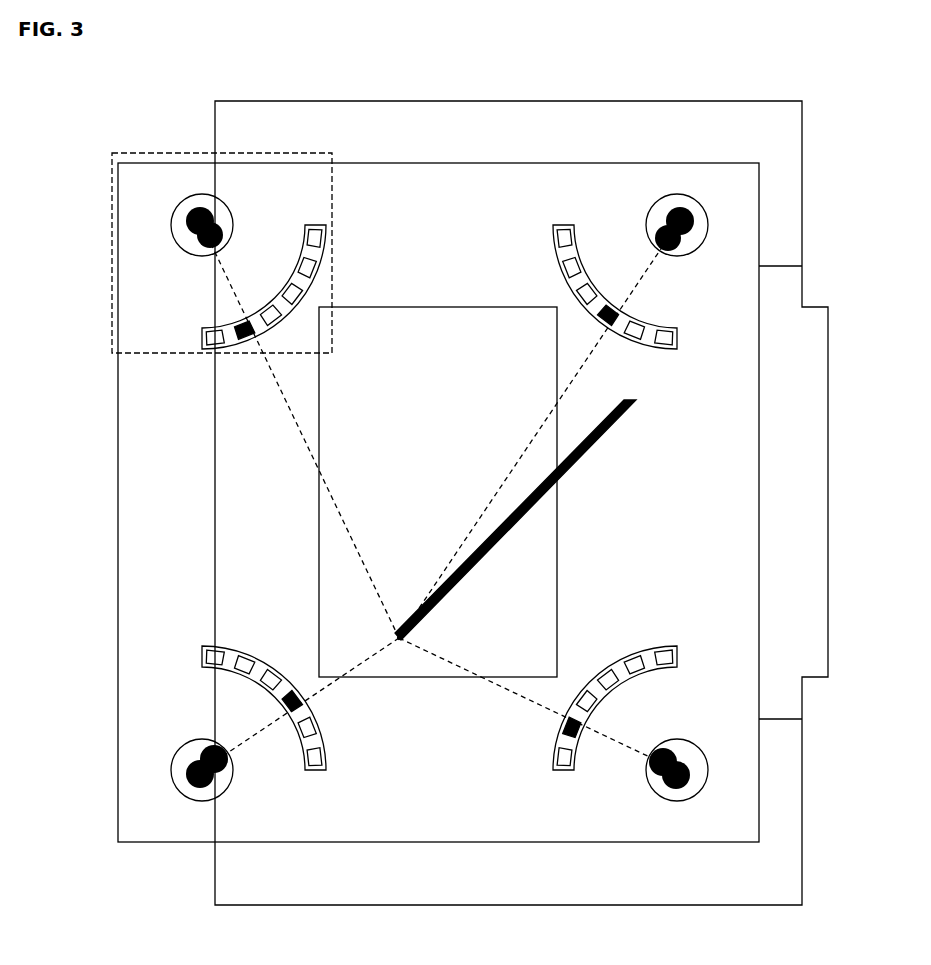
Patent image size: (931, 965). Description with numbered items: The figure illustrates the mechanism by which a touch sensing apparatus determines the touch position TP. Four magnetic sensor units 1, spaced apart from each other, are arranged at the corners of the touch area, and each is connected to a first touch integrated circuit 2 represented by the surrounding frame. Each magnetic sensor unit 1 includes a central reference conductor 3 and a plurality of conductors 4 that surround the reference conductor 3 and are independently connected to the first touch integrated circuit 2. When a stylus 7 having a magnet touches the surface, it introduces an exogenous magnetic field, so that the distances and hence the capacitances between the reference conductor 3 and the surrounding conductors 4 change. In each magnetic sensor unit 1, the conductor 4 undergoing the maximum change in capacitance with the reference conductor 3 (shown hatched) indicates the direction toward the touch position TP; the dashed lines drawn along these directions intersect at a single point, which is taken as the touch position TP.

The magnetic sensor unit 1 is at (112, 255).
The first touch integrated circuit 2 is at (815, 494).
The reference conductor 3 is at (197, 213).
The conductor 4 is at (208, 338).
The stylus 7 is at (636, 400).
The touch position TP is at (399, 650).